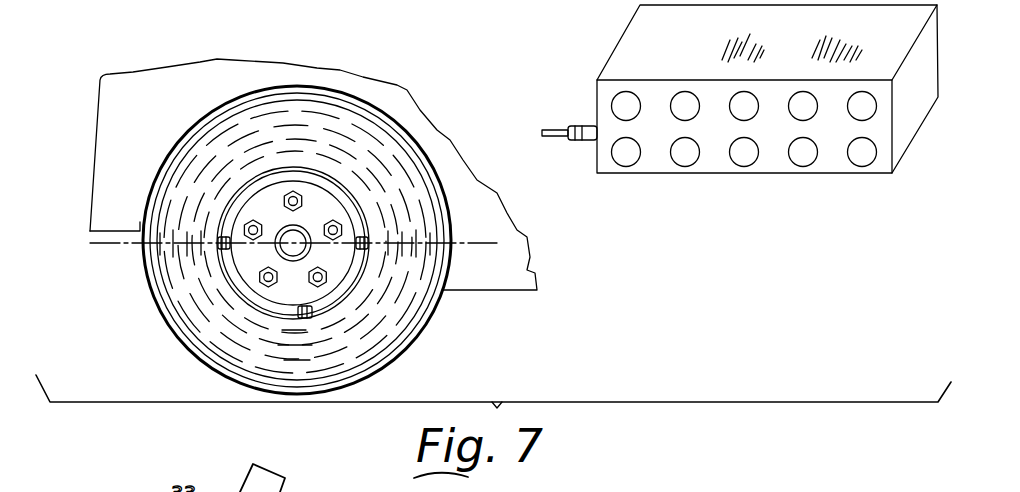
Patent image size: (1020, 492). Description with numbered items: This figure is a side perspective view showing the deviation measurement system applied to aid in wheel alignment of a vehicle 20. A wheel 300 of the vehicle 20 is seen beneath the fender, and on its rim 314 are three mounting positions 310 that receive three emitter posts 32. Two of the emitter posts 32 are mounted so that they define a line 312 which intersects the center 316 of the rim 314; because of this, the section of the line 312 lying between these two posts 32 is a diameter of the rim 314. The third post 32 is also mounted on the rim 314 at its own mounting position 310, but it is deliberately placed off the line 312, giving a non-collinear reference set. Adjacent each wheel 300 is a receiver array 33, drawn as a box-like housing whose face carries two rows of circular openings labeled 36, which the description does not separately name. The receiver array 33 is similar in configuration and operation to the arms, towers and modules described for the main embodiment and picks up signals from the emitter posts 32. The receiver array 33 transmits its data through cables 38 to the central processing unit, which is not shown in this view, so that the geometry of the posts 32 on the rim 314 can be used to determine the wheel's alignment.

The vehicle 20 is at (97, 93).
The wheel 300 is at (408, 181).
The emitter posts 32 is at (220, 247).
The rim 314 is at (330, 186).
The center 316 is at (283, 232).
The mounting positions 310 is at (220, 236).
The line 312 is at (141, 246).
The receiver array 33 is at (617, 39).
The indicator ports 36 is at (628, 166).
The cables 38 is at (568, 98).